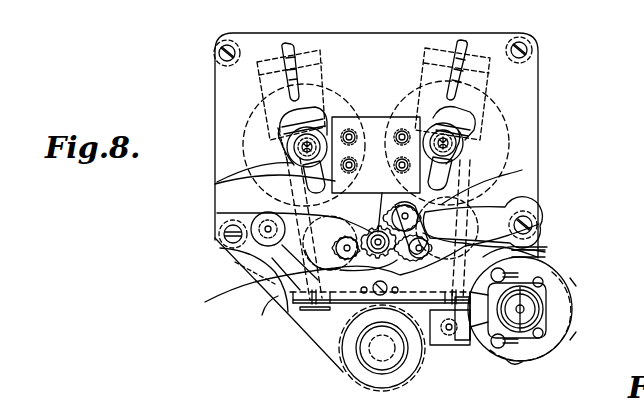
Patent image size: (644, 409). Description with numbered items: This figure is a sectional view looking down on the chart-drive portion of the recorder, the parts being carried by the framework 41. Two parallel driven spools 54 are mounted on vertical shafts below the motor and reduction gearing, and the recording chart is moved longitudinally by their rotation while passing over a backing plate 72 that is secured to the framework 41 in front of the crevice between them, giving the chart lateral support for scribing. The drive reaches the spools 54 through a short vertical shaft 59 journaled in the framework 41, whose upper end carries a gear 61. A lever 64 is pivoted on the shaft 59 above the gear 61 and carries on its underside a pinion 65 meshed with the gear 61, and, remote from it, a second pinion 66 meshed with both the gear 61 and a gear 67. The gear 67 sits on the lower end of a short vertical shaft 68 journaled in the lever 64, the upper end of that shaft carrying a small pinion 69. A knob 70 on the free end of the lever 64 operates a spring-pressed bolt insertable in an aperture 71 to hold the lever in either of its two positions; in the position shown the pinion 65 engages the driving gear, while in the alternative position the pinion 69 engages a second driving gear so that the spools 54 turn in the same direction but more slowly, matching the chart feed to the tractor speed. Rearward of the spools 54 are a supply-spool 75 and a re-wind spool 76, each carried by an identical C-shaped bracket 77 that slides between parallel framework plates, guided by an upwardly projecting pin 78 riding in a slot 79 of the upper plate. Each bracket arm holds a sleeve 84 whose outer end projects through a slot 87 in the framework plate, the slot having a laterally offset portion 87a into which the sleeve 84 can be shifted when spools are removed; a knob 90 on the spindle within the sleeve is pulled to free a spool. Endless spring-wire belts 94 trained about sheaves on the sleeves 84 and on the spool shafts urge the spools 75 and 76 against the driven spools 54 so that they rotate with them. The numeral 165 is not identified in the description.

The framework 41 is at (214, 168).
The spools 54 is at (566, 177).
The vertical shaft 59 is at (378, 215).
The gear 61 is at (368, 170).
The lever 64 is at (283, 250).
The pinion 65 is at (262, 315).
The second pinion 66 is at (495, 210).
The gear 67 is at (540, 256).
The vertical shaft 68 is at (520, 247).
The pinion 69 is at (500, 222).
The knob 70 is at (255, 233).
The aperture 71 is at (217, 212).
The backing plate 72 is at (347, 297).
The supply-spool 75 is at (500, 142).
The re-wind spool 76 is at (278, 133).
The C-shaped brackets 77 is at (386, 92).
The pin 78 is at (289, 44).
The slot 79 is at (283, 50).
The sleeve 84 is at (283, 146).
The slot 87 is at (217, 182).
The laterally offset portions 87a is at (280, 128).
The knob 90 is at (283, 144).
The endless belts 94 is at (270, 195).
The motor 165 is at (563, 323).